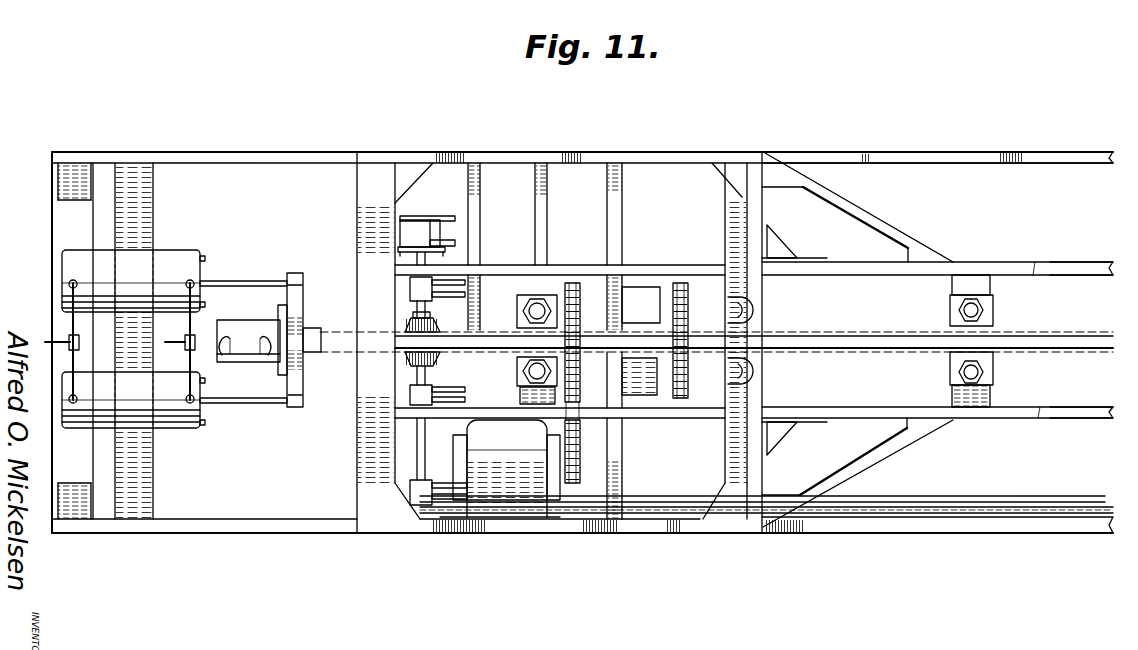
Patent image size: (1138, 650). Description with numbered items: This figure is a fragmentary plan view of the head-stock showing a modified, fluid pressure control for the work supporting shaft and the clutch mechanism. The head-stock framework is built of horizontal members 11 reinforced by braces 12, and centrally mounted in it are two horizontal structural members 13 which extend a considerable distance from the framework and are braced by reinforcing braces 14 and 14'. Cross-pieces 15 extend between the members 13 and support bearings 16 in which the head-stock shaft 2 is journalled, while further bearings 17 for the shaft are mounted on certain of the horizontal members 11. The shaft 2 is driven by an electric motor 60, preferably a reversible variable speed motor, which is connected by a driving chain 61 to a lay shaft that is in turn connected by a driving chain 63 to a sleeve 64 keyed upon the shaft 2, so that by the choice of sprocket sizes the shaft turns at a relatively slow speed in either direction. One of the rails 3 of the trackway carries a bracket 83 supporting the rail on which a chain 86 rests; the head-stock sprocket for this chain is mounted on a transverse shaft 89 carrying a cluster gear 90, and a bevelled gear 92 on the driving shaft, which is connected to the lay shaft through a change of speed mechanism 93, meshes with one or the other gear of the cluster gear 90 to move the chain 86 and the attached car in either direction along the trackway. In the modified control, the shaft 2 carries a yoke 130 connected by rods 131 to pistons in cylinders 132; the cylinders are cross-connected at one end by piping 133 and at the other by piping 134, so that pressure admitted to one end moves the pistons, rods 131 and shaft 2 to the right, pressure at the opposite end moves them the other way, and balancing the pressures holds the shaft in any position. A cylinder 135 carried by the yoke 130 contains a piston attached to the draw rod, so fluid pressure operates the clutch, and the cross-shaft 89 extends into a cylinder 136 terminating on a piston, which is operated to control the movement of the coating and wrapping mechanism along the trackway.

The head-stock shaft 2 is at (331, 336).
The rail 3 is at (993, 155).
The horizontal members 11 is at (527, 152).
The braces 12 is at (280, 528).
The horizontal structural members 13 is at (1055, 272).
The reinforcing brace 14 is at (937, 340).
The reinforcing brace 14' is at (857, 340).
The cross-pieces 15 is at (985, 285).
The bearings 16 is at (955, 370).
The bearings 17 is at (745, 335).
The electric motor 60 is at (521, 446).
The driving chain 61 is at (583, 447).
The driving chain 63 is at (748, 378).
The sleeve 64 is at (630, 330).
The bracket 83 is at (937, 497).
The chain 86 is at (1026, 505).
The shaft 89 is at (440, 315).
The cluster gear 90 is at (420, 362).
The bevelled gear 92 is at (438, 355).
The change of speed mechanism 93 is at (648, 405).
The yoke 130 is at (305, 274).
The rods 131 is at (236, 280).
The cylinders 132 is at (166, 258).
The piping 133 is at (193, 324).
The piping 134 is at (72, 322).
The cylinder 135 is at (246, 355).
The cylinder 136 is at (422, 225).